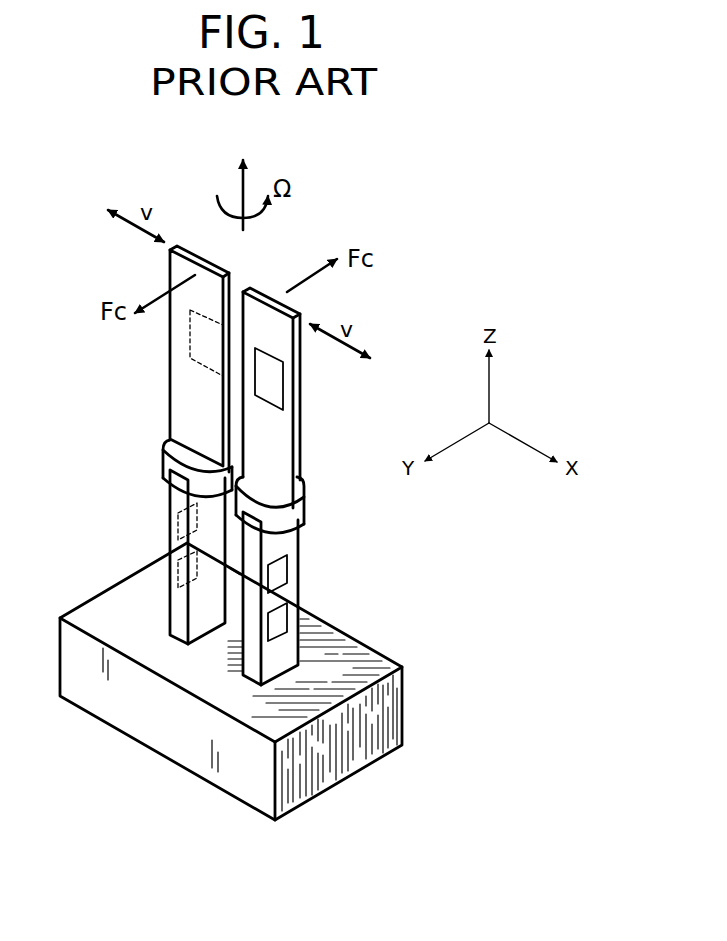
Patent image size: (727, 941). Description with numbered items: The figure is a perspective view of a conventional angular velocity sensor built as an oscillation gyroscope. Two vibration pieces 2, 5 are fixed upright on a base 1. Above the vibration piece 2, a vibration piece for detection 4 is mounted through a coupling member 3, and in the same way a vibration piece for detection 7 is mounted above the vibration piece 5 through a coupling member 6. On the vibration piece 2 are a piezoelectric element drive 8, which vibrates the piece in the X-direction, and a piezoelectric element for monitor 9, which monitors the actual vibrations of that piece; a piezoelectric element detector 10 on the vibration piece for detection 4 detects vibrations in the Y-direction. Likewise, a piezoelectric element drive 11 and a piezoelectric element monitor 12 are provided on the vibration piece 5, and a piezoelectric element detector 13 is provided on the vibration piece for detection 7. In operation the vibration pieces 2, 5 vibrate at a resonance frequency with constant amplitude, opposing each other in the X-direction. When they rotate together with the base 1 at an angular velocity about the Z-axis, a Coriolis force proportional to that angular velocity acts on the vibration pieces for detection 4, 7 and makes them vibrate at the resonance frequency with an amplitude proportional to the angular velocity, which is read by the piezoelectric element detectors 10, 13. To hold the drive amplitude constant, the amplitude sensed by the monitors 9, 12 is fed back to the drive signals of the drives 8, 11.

The base 1 is at (353, 632).
The vibration piece 2 is at (290, 593).
The coupling member 3 is at (300, 497).
The vibration piece for detection 4 is at (300, 412).
The vibration piece 5 is at (170, 548).
The coupling member 6 is at (167, 458).
The vibration piece for detection 7 is at (170, 397).
The piezoelectric element drive 8 is at (290, 618).
The piezoelectric element for monitor 9 is at (288, 565).
The piezoelectric element detector 10 is at (283, 385).
The piezoelectric element drive 11 is at (180, 586).
The piezoelectric element monitor 12 is at (178, 525).
The piezoelectric element detector 13 is at (190, 340).